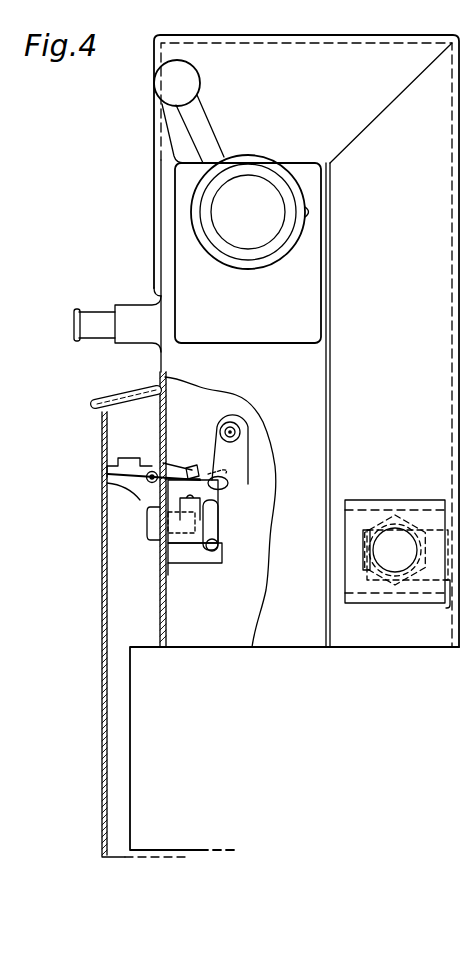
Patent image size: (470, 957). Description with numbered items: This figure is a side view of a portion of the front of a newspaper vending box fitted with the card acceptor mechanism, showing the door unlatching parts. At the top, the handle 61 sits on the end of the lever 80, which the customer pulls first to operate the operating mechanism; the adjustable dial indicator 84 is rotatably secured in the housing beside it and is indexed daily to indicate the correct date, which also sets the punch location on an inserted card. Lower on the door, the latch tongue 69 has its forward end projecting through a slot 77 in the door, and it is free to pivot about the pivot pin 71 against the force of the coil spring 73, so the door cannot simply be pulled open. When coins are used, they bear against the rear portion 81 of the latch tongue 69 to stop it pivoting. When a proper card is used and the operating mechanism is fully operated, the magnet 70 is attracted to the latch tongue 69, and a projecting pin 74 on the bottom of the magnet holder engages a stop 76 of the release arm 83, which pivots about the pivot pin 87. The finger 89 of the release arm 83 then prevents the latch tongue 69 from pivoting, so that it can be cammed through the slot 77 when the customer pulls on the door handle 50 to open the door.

The door handle 50 is at (92, 403).
The handle 61 is at (158, 84).
The latch tongue 69 is at (138, 462).
The magnet 70 is at (216, 500).
The pivot pin 71 is at (147, 482).
The coil spring 73 is at (126, 480).
The projecting pin 74 is at (212, 565).
The stop 76 is at (219, 547).
The slot 77 is at (168, 470).
The lever 80 is at (190, 127).
The rear portion 81 is at (227, 486).
The release arm 83 is at (214, 438).
The adjustable dial indicator 84 is at (259, 230).
The pivot pin 87 is at (223, 422).
The finger 89 is at (183, 476).